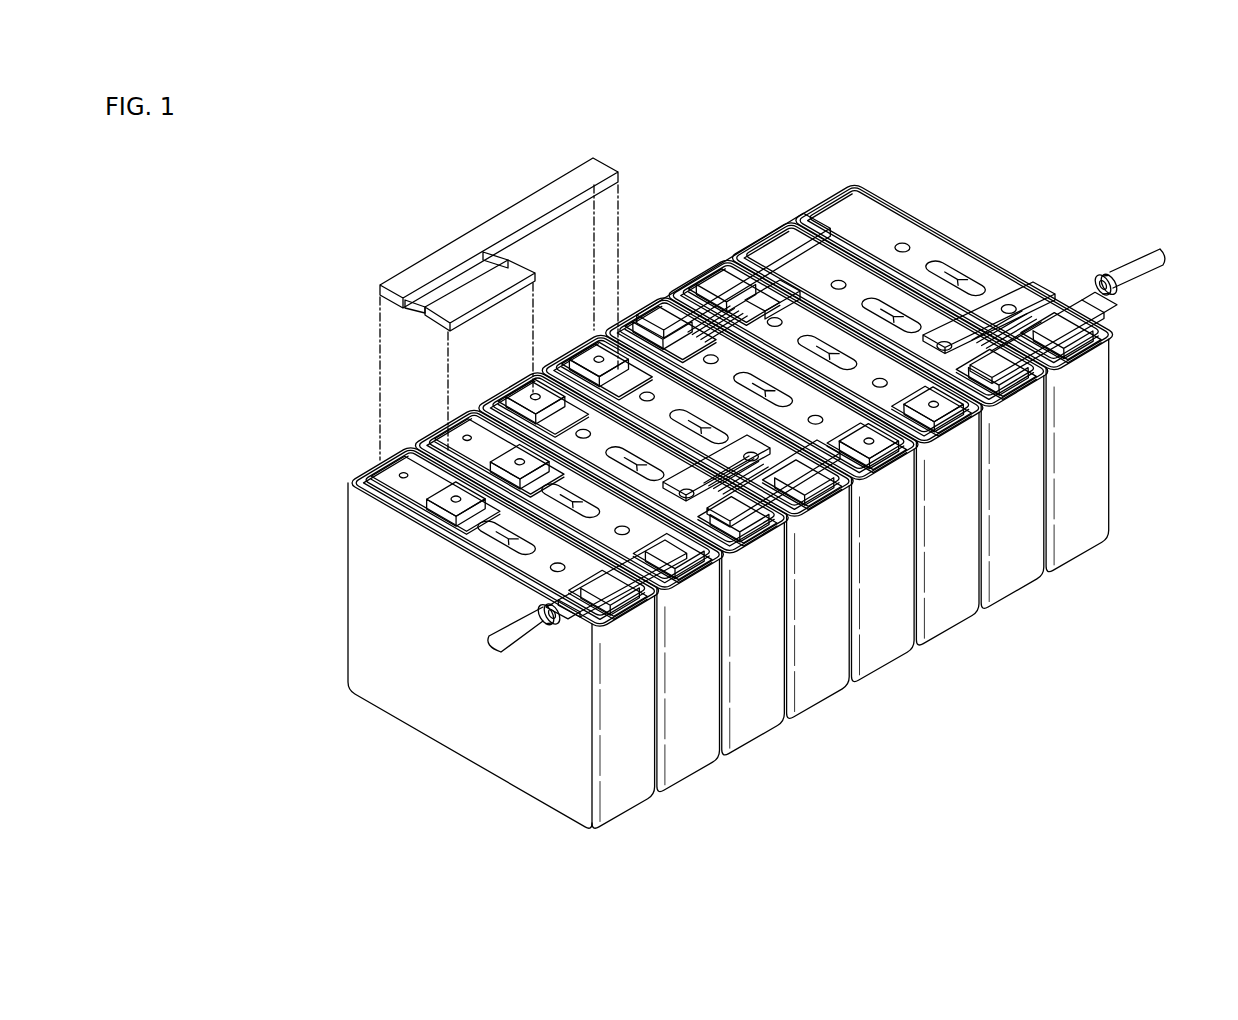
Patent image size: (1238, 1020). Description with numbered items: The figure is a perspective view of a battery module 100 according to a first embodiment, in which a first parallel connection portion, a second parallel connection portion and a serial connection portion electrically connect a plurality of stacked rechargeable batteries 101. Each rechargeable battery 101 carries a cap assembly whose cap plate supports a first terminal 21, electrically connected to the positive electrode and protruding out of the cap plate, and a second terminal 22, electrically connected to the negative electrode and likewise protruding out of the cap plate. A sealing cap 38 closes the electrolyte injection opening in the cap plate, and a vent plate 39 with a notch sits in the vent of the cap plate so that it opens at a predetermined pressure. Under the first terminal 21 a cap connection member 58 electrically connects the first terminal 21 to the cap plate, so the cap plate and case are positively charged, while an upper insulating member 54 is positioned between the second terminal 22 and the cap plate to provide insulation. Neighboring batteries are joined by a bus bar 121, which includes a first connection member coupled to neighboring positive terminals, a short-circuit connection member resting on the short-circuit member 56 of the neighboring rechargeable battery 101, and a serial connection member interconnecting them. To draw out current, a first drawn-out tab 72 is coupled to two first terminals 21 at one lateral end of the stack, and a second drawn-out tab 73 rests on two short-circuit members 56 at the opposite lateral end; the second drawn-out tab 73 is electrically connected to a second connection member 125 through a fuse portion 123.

The battery module 100 is at (743, 494).
The rechargeable battery 101 is at (843, 708).
The first terminal 21 is at (593, 357).
The second terminal 22 is at (440, 505).
The sealing cap 38 is at (905, 237).
The vent plate 39 is at (962, 268).
The upper insulating member 54 is at (412, 495).
The short-circuit member 56 is at (403, 478).
The cap connection member 58 is at (570, 365).
The first drawn-out tab 72 is at (577, 603).
The second drawn-out tab 73 is at (1040, 328).
The bus bar 121 is at (540, 203).
The fuse portion 123 is at (487, 252).
The second connection member 125 is at (462, 290).